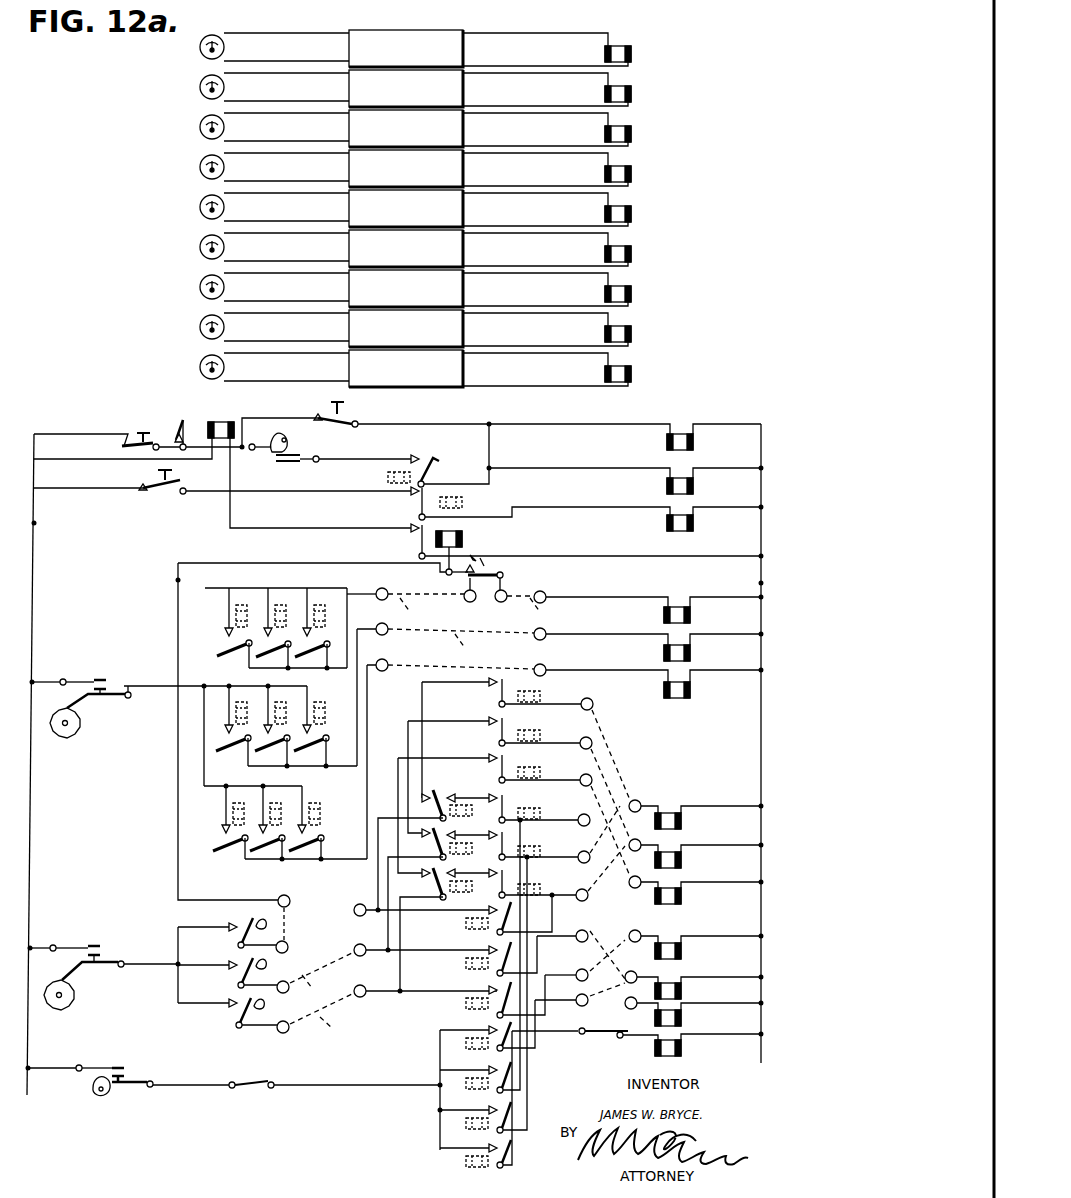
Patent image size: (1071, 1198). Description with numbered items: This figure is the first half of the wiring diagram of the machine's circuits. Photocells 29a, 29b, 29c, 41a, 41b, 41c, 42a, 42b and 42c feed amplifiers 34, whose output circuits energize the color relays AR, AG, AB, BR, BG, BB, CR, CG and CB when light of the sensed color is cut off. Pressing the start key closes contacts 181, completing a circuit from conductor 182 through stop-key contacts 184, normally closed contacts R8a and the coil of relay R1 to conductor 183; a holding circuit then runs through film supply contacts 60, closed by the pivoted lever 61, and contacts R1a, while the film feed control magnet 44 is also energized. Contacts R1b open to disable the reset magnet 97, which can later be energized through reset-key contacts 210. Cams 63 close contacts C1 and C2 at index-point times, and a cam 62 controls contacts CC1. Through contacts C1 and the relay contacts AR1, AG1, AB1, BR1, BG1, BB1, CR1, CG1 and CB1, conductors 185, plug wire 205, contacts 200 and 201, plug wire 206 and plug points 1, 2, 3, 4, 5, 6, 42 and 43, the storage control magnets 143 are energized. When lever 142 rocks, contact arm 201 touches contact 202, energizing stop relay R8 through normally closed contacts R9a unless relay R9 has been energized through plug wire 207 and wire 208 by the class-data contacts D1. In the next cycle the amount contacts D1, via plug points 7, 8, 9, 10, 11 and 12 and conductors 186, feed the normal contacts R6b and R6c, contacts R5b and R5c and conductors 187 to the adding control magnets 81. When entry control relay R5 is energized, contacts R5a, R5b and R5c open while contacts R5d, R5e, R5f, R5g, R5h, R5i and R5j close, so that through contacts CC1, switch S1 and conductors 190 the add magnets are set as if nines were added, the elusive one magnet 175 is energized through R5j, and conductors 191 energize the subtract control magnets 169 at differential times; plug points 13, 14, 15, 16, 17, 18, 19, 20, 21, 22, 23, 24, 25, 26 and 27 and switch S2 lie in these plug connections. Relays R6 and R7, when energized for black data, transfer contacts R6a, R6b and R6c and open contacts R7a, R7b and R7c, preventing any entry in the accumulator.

The photocell 29a is at (196, 46).
The photocell 29b is at (196, 88).
The photocell 29c is at (196, 128).
The photocell 41a is at (196, 168).
The photocell 41b is at (196, 208).
The photocell 41c is at (196, 248).
The photocell 42a is at (196, 288).
The photocell 42b is at (196, 328).
The photocell 42c is at (196, 368).
The amplifier 34 is at (465, 33).
The relay AR is at (649, 55).
The relay AG is at (649, 95).
The relay AB is at (649, 135).
The relay BR is at (649, 175).
The relay BG is at (649, 215).
The relay BB is at (649, 255).
The relay CR is at (649, 295).
The relay CG is at (649, 335).
The relay CB is at (649, 375).
The stop key contacts 184 is at (134, 429).
The normally closed contacts R8a is at (182, 420).
The stop relay R8 is at (205, 423).
The start key contacts 181 is at (316, 417).
The pivoted lever 61 is at (272, 438).
The film supply control contacts 60 is at (284, 458).
The reset key contacts 210 is at (166, 486).
The conductor 182 is at (36, 525).
The relay contacts R1a is at (430, 450).
The relay R1 is at (705, 441).
The relay contacts R1b is at (418, 507).
The film feed control magnet 44 is at (694, 486).
The reset magnet 97 is at (694, 523).
The normally closed contacts R9a is at (420, 541).
The relay R9 is at (462, 539).
The wire 208 is at (178, 580).
The lever 142 is at (446, 573).
The contacts 200 is at (504, 579).
The contact arm 201 is at (475, 570).
The contact 202 is at (492, 562).
The terminal 1 is at (378, 598).
The terminal 2 is at (378, 636).
The terminal 3 is at (380, 671).
The terminal 4 is at (546, 594).
The terminal 5 is at (545, 639).
The terminal 6 is at (536, 674).
The terminal 42 is at (468, 602).
The terminal 43 is at (501, 602).
The plug wire 205 is at (426, 609).
The plug wire 206 is at (544, 610).
The conductors 185 is at (412, 667).
The conductor 183 is at (758, 583).
The storage control magnet 143 is at (691, 615).
The relay contacts AB1 is at (222, 645).
The relay contacts AG1 is at (256, 658).
The relay contacts AR1 is at (298, 658).
The relay contacts BB1 is at (218, 748).
The relay contact BG1 is at (256, 754).
The relay contacts BR1 is at (299, 754).
The relay contacts CB1 is at (209, 852).
The relay contact CG1 is at (246, 856).
The relay contacts CR1 is at (292, 856).
The cam contacts C1 is at (109, 670).
The cam contacts C2 is at (116, 939).
The cam contacts CC1 is at (136, 1060).
The cam 63 is at (80, 726).
The cam 62 is at (100, 1100).
The switch S1 is at (238, 1090).
The contacts D1 is at (242, 922).
The plug wire 207 is at (304, 924).
The conductors 186 is at (326, 996).
The terminal 7 is at (288, 952).
The terminal 8 is at (289, 992).
The terminal 9 is at (289, 1032).
The terminal 10 is at (360, 906).
The terminal 11 is at (355, 947).
The terminal 12 is at (360, 986).
The entry control contacts R5a is at (496, 686).
The entry control contacts R5b is at (500, 725).
The entry control contacts R5c is at (500, 762).
The entry control contacts R5d is at (494, 908).
The entry control contacts R5e is at (494, 948).
The entry control contacts R5f is at (494, 988).
The entry control contacts R5g is at (494, 1028).
The entry control contacts R5h is at (494, 1068).
The entry control contacts R5i is at (494, 1108).
The entry control contacts R5j is at (494, 1146).
The entry control relay R5 is at (544, 694).
The entry control contacts R6a is at (445, 789).
The entry control contacts R6b is at (437, 824).
The entry control contacts R6c is at (432, 862).
The relay R6 is at (476, 848).
The entry control contacts R7a is at (496, 792).
The entry control contacts R7b is at (496, 830).
The entry control contacts R7c is at (496, 868).
The relay R7 is at (529, 841).
The terminal 13 is at (592, 700).
The terminal 14 is at (591, 738).
The terminal 15 is at (582, 776).
The terminal 16 is at (580, 814).
The terminal 17 is at (580, 852).
The terminal 18 is at (578, 890).
The terminal 19 is at (578, 942).
The terminal 20 is at (576, 981).
The terminal 21 is at (576, 1005).
The terminal 22 is at (643, 803).
The terminal 23 is at (636, 840).
The terminal 24 is at (634, 876).
The terminal 25 is at (641, 933).
The terminal 26 is at (637, 975).
The terminal 27 is at (624, 1007).
The conductors 187 is at (613, 776).
The conductors 190 is at (600, 880).
The conductors 191 is at (598, 942).
The adding control magnets 81 is at (683, 822).
The subtract control magnets 169 is at (683, 951).
The elusive one magnet 175 is at (683, 1048).
The switch S2 is at (594, 1037).